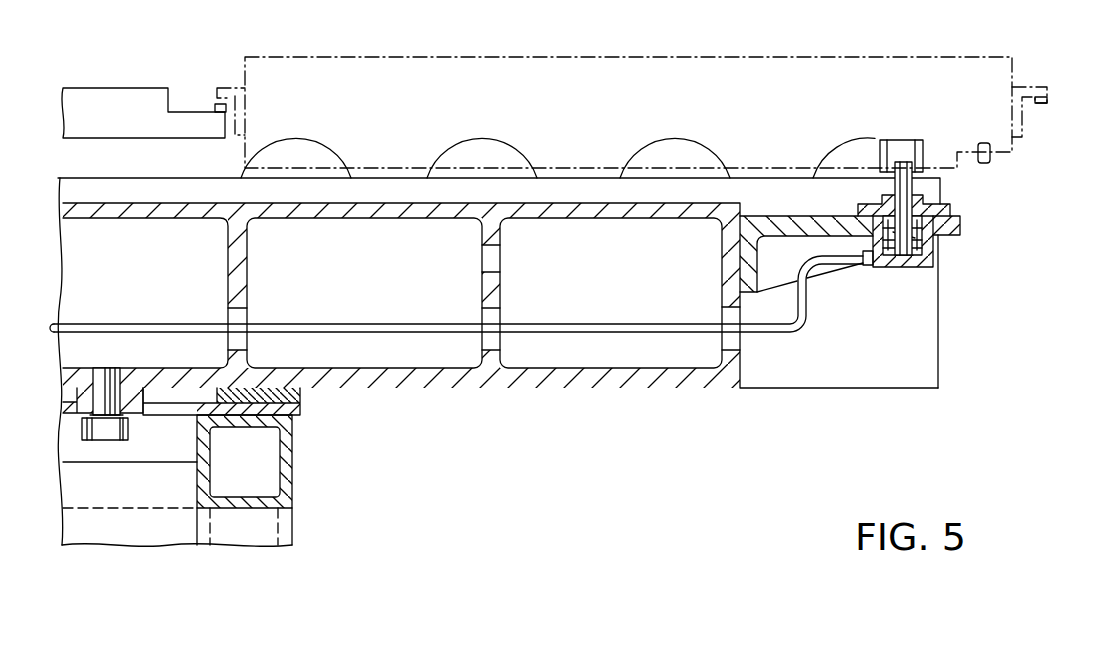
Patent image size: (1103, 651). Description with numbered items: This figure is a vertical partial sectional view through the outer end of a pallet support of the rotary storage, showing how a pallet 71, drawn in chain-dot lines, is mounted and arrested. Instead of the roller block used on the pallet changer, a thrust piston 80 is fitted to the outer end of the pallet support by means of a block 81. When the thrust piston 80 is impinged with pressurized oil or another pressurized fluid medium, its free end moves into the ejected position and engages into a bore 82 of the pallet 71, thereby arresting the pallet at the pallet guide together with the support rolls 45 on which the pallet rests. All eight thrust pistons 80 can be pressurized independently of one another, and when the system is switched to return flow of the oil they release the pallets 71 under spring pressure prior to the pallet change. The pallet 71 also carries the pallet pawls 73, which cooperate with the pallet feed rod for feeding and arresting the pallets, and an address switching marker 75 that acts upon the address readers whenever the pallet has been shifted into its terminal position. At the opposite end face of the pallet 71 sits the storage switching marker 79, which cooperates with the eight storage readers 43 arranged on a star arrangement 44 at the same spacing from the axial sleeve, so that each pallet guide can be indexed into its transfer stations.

The star arrangement 44 is at (100, 98).
The storage reader 43 is at (215, 105).
The storage switching marker 79 is at (217, 90).
The pallet 71 is at (718, 72).
The support roll 45 is at (448, 158).
The bore 82 is at (898, 150).
The address switching marker 75 is at (1040, 103).
The pallet pawl 73 is at (982, 163).
The block 81 is at (957, 222).
The thrust piston 80 is at (908, 243).